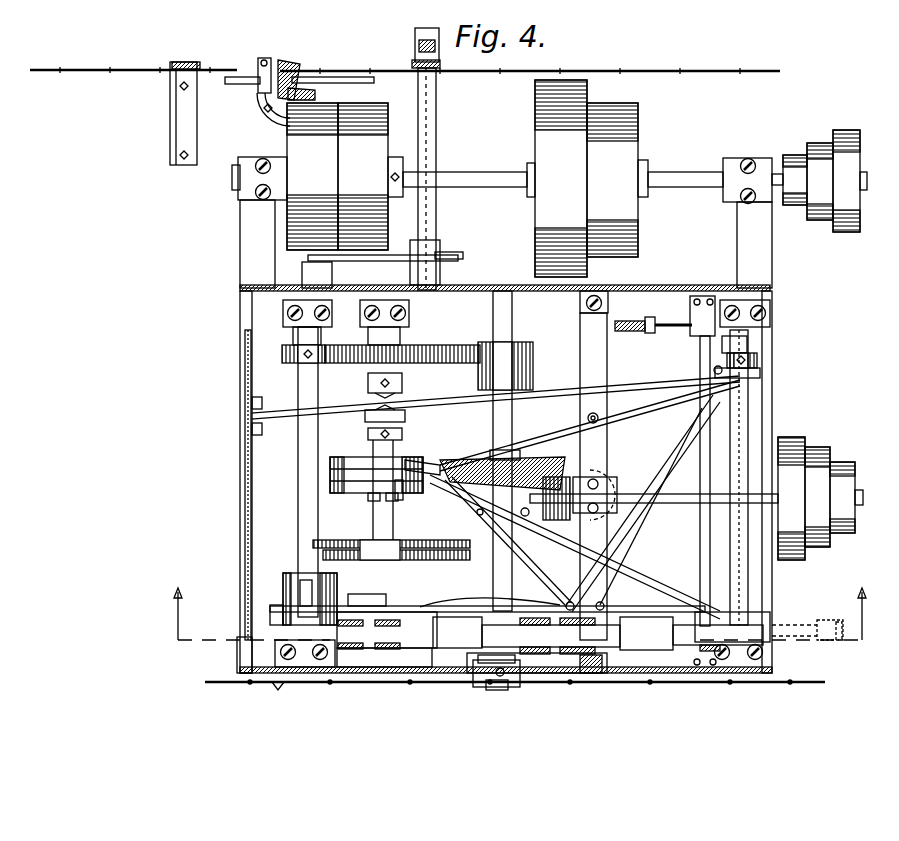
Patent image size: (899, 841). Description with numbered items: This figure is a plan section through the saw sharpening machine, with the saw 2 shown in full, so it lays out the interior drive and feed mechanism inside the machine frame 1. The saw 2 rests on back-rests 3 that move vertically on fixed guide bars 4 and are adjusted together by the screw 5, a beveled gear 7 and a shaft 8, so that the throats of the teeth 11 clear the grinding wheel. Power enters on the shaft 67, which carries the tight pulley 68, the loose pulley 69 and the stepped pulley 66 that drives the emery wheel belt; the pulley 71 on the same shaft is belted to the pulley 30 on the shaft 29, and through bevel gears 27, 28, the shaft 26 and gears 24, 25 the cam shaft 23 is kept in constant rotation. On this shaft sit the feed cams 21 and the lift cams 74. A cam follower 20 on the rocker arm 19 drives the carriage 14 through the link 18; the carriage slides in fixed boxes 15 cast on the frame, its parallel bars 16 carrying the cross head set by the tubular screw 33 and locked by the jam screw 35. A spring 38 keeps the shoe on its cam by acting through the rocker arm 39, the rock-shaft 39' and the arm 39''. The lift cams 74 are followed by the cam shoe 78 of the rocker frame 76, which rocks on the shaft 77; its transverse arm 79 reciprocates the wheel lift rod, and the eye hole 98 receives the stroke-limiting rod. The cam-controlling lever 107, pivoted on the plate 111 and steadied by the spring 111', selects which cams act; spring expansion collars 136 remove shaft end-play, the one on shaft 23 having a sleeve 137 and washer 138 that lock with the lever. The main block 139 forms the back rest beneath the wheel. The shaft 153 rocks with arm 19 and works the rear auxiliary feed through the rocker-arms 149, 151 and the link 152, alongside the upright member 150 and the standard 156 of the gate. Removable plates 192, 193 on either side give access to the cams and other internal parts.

The machine frame 1 is at (772, 308).
The saw 2 is at (708, 76).
The back-rests 3 is at (507, 688).
The vertical guide bars 4 is at (470, 670).
The screw 5 is at (524, 705).
The beveled gear 7 is at (290, 62).
The shaft 8 is at (235, 86).
The saw teeth 11 is at (95, 74).
The carriage 14 is at (348, 657).
The fixed boxes 15 is at (462, 640).
The parallel bars 16 is at (558, 635).
The link 18 is at (335, 620).
The rocker arm 19 is at (282, 612).
The cam follower 20 is at (333, 568).
The cams 21 is at (368, 553).
The shaft 23 is at (390, 453).
The gear 24 is at (428, 346).
The gear 25 is at (533, 358).
The shaft 26 is at (507, 420).
The bevel gear 27 is at (530, 470).
The bevel gear 28 is at (545, 503).
The shaft 29 is at (678, 501).
The pulley 30 is at (812, 450).
The screw 33 is at (825, 622).
The jam screw 35 is at (838, 642).
The spring 38 is at (630, 331).
The rocker arm 39 is at (685, 325).
The rock-shaft 39' is at (757, 481).
The arm 39'' is at (725, 682).
The pulley 66 is at (583, 143).
The shaft 67 is at (450, 176).
The pulley 68 is at (370, 176).
The loose pulley 69 is at (312, 176).
The pulley 71 is at (830, 150).
The cams 74 is at (330, 478).
The cam-operated rocker frame 76 is at (445, 493).
The shaft 77 is at (738, 578).
The cam shoe 78 is at (393, 495).
The transverse arm 79 is at (592, 535).
The eye hole 98 is at (470, 520).
The cam-controlling lever 107 is at (632, 372).
The plate 111 is at (272, 396).
The spring 111' is at (276, 434).
The spring expansion collars 136 is at (285, 352).
The sleeve 137 is at (404, 387).
The washer 138 is at (407, 415).
The main block 139 is at (490, 675).
The rocker-arm 149 is at (413, 40).
The post 150 is at (430, 220).
The rocker-arm 151 is at (440, 250).
The link 152 is at (312, 280).
The shaft 153 is at (312, 500).
The standard 156 is at (438, 64).
The removable plate 192 is at (246, 454).
The removable plate 193 is at (762, 374).